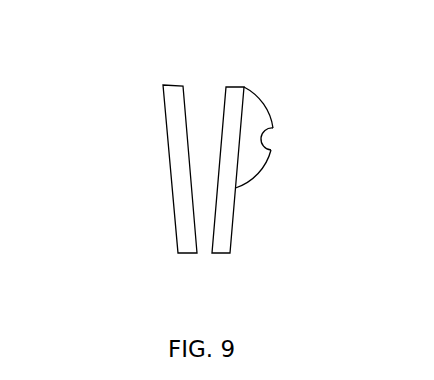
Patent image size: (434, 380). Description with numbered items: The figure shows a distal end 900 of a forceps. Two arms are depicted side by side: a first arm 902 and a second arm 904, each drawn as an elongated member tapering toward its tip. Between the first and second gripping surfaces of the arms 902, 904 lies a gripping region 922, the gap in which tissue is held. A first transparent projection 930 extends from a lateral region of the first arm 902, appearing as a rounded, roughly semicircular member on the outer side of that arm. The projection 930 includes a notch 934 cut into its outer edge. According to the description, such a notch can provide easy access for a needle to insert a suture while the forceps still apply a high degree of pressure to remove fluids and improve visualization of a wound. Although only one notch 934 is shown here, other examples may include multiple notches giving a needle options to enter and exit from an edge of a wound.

The distal end 900 is at (126, 284).
The first arm 902 is at (221, 215).
The second arm 904 is at (175, 195).
The gripping region 922 is at (204, 105).
The first transparent projection 930 is at (313, 124).
The notch 934 is at (272, 138).